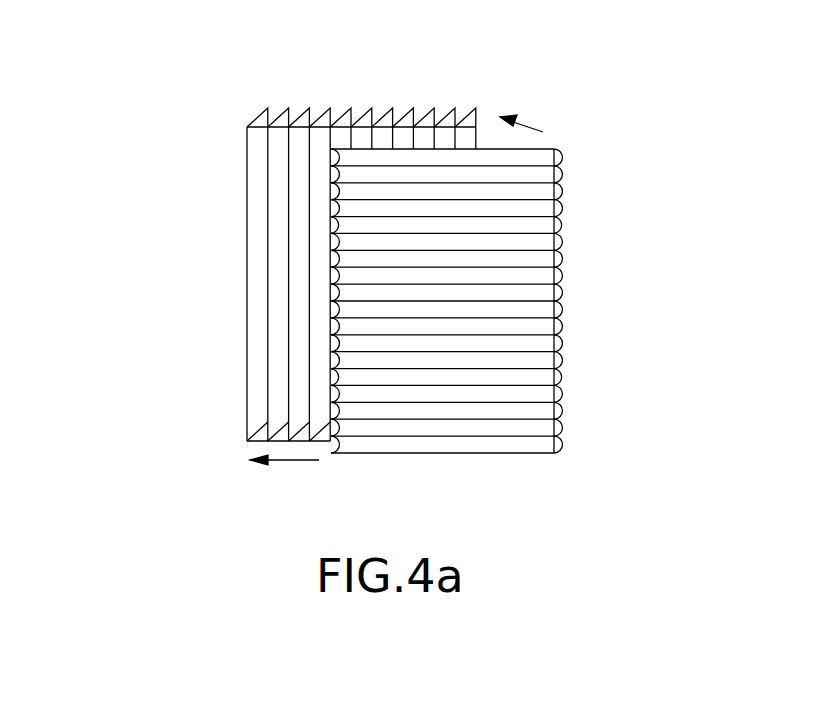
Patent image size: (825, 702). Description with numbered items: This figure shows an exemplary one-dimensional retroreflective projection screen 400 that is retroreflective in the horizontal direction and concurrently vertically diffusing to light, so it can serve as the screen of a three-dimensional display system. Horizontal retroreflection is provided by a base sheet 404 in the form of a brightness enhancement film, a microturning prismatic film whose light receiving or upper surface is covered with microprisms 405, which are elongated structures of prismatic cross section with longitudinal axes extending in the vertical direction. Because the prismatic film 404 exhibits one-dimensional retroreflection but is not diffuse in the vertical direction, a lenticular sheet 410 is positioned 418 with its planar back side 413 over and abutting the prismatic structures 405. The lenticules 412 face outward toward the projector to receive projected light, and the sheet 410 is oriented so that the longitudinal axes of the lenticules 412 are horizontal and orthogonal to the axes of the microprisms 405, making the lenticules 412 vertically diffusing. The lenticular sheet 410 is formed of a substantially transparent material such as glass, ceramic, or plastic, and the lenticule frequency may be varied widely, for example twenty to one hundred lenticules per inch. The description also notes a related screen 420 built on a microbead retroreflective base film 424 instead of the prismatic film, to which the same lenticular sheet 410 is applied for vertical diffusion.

The 1D retroreflective projection screen 400 is at (558, 112).
The base sheet 404 is at (235, 407).
The microprisms 405 is at (272, 317).
The lenticular sheet 410 is at (537, 455).
The lenticules 412 is at (418, 413).
The planar back side 413 is at (330, 438).
The positioning 418 is at (295, 460).
The 1D retroreflective projection screen 420 is at (819, 322).
The base film 424 is at (824, 444).